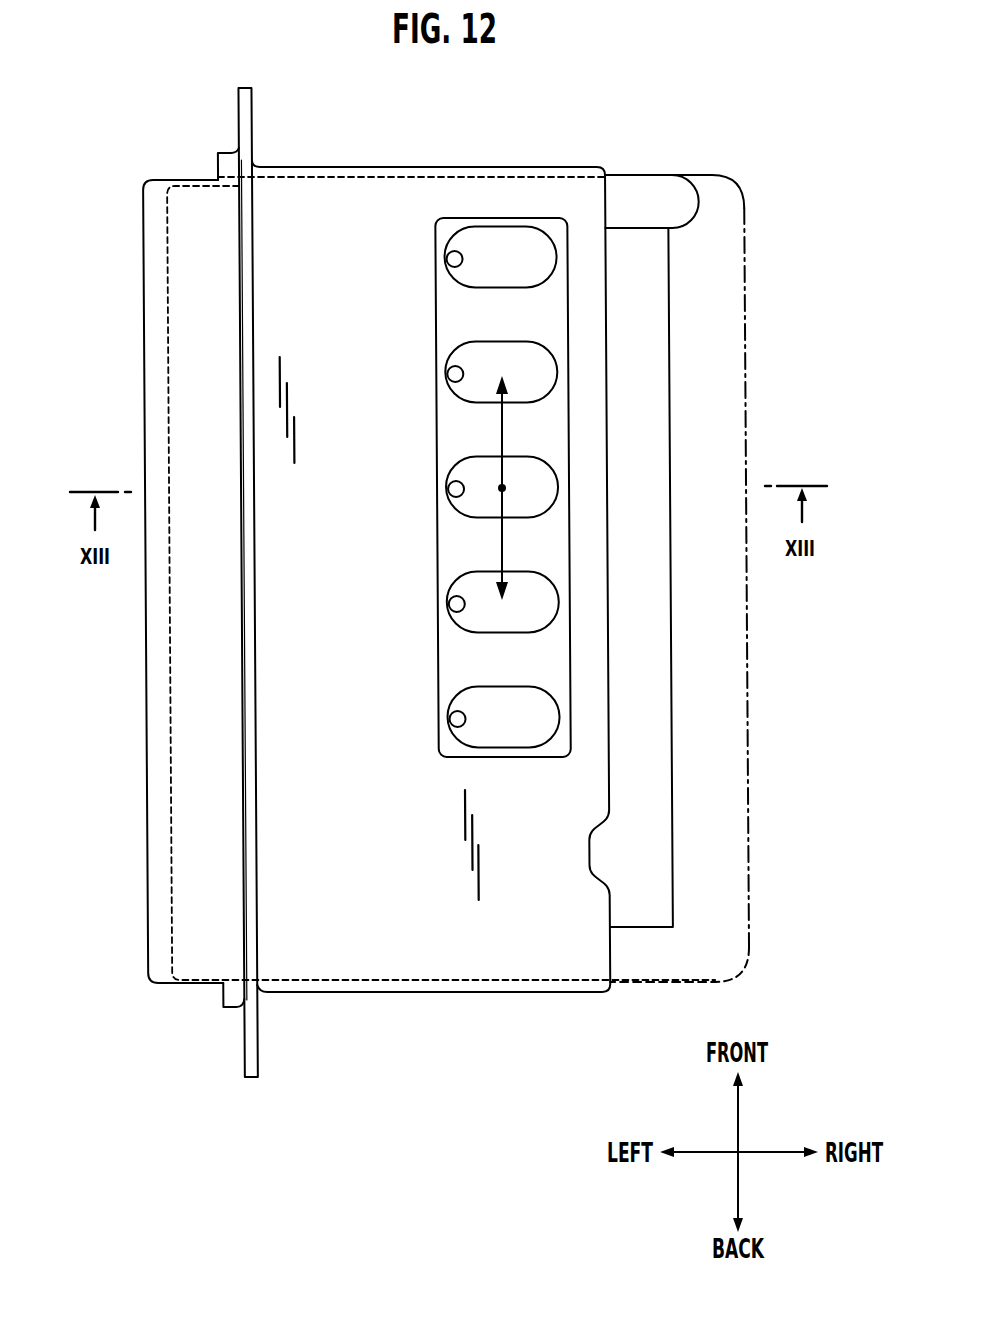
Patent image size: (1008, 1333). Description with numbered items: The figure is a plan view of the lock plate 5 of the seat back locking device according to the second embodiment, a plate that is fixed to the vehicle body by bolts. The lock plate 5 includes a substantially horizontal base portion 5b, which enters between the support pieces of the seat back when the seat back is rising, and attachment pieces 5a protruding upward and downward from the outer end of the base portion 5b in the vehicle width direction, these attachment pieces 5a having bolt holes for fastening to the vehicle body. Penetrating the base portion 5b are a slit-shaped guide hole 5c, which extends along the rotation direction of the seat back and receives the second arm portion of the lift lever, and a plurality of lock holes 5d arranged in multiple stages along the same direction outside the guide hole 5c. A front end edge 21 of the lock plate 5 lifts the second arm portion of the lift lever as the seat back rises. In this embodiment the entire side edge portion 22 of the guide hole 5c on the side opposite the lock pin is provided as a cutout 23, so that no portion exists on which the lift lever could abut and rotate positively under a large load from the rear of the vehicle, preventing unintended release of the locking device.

The lock plate 5 is at (384, 1000).
The attachment piece 5a is at (157, 660).
The base portion 5b is at (433, 942).
The guide hole 5c is at (637, 636).
The lock holes 5d is at (452, 270).
The front end edge 21 is at (647, 190).
The side edge portion 22 is at (713, 717).
The cutout 23 is at (713, 793).